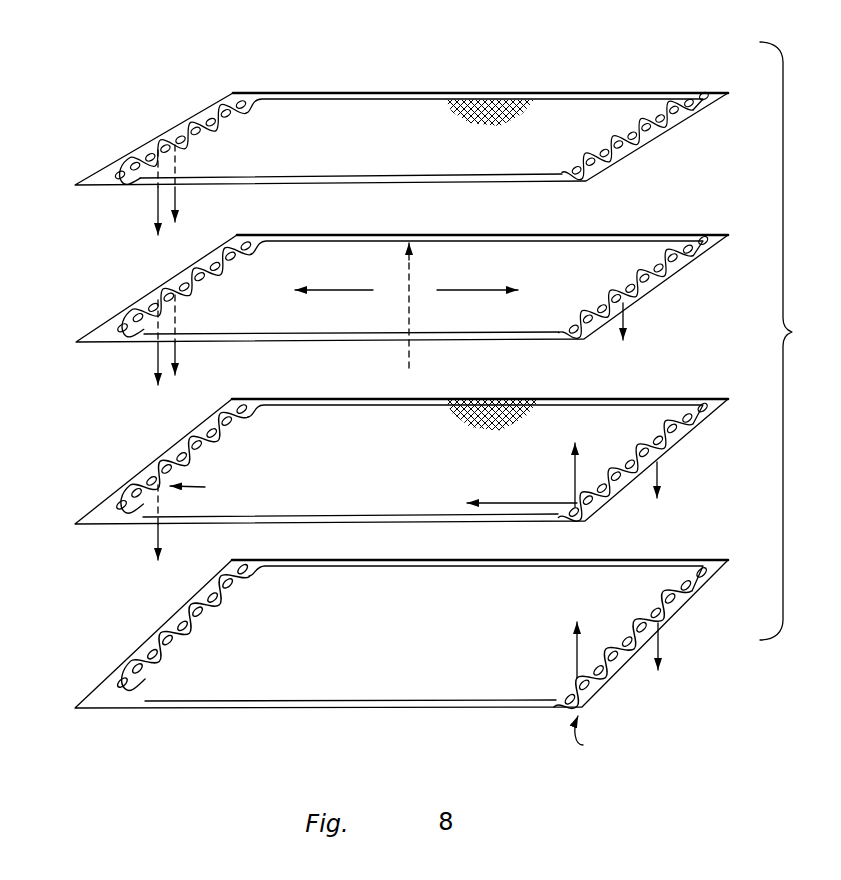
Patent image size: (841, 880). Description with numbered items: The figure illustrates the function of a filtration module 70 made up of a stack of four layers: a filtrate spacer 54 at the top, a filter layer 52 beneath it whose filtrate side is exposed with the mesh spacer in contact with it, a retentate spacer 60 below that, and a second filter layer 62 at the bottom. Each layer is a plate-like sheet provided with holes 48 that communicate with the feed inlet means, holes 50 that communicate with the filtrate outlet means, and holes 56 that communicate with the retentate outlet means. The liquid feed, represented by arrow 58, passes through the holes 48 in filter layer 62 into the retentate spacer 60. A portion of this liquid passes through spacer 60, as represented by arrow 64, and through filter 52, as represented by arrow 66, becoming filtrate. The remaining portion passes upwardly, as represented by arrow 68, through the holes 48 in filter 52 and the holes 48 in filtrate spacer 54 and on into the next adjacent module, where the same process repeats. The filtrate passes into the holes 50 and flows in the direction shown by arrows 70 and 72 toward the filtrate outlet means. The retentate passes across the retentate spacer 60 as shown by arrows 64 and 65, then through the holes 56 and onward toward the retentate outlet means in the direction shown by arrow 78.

The holes 48 is at (671, 116).
The holes 50 is at (172, 143).
The filter layer 52 is at (447, 279).
The filtrate spacer 54 is at (380, 144).
The holes 56 is at (249, 93).
The arrow 58 is at (617, 745).
The retentate spacer 60 is at (363, 477).
The filter layer 62 is at (390, 644).
The arrow 64 is at (512, 503).
The arrow 65 is at (204, 488).
The arrow 66 is at (407, 275).
The arrow 68 is at (574, 472).
The filtration module 70 is at (180, 200).
The arrow 72 is at (626, 320).
The arrow 78 is at (156, 206).